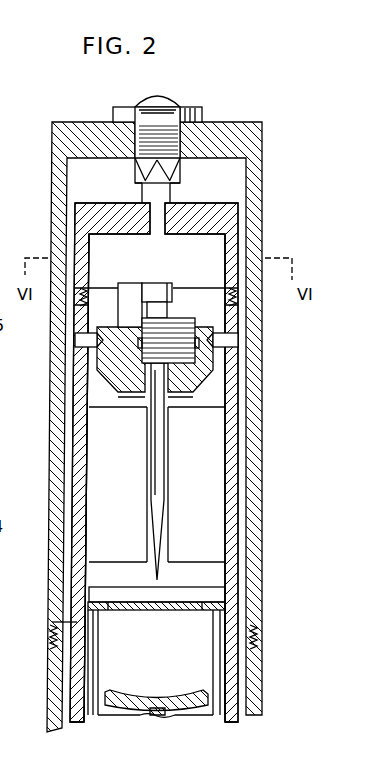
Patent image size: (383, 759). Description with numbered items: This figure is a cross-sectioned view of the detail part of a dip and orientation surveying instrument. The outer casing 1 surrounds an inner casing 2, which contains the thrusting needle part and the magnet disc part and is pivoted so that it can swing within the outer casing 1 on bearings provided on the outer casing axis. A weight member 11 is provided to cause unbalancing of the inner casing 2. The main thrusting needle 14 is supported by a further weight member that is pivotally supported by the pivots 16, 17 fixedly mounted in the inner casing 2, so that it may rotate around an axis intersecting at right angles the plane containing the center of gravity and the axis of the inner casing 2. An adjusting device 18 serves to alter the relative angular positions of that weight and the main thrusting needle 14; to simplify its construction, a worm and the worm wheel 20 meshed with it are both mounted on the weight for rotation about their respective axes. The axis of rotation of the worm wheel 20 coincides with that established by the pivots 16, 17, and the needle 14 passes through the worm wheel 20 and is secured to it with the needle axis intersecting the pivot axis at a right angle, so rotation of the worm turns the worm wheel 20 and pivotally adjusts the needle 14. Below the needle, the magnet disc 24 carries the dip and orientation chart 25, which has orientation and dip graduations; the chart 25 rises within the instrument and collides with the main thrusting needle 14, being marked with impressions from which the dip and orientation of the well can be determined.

The outer casing 1 is at (252, 323).
The inner casing 2 is at (240, 397).
The weight member 11 is at (205, 450).
The main thrusting needle 14 is at (157, 507).
The pivot 16 is at (83, 340).
The pivot 17 is at (228, 342).
The adjusting device 18 is at (182, 318).
The worm wheel 20 is at (100, 383).
The magnet disc 24 is at (203, 700).
The dip and orientation chart 25 is at (173, 690).